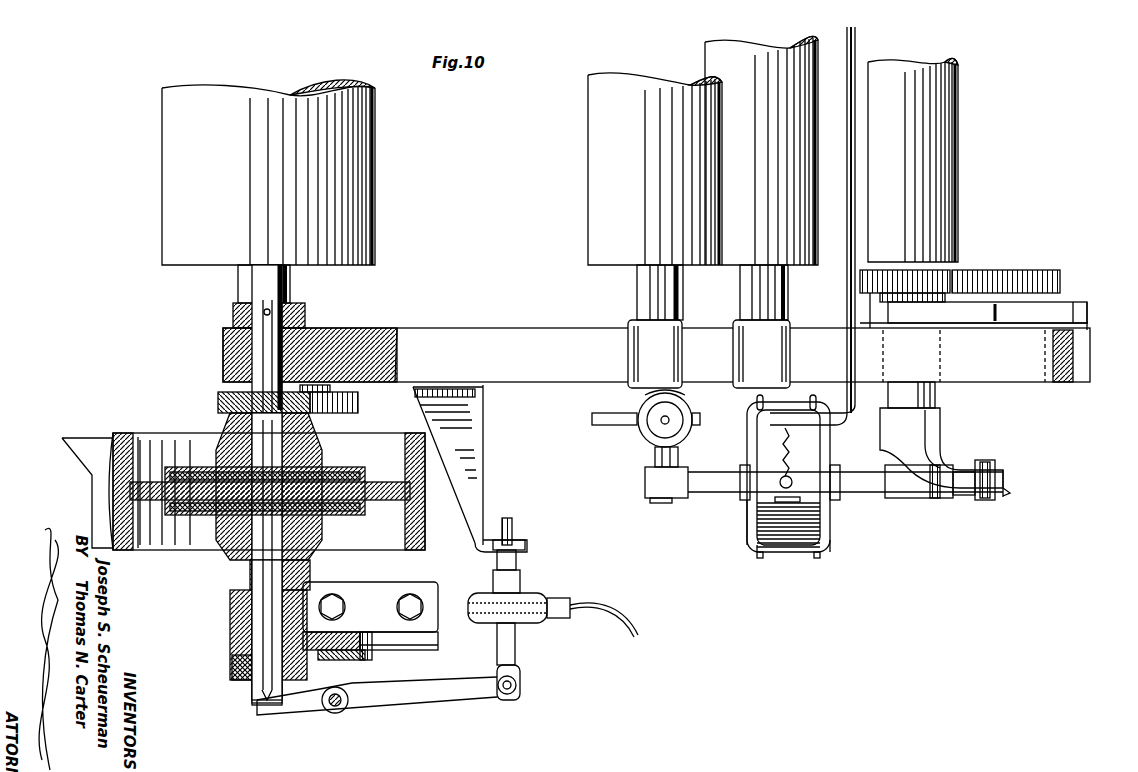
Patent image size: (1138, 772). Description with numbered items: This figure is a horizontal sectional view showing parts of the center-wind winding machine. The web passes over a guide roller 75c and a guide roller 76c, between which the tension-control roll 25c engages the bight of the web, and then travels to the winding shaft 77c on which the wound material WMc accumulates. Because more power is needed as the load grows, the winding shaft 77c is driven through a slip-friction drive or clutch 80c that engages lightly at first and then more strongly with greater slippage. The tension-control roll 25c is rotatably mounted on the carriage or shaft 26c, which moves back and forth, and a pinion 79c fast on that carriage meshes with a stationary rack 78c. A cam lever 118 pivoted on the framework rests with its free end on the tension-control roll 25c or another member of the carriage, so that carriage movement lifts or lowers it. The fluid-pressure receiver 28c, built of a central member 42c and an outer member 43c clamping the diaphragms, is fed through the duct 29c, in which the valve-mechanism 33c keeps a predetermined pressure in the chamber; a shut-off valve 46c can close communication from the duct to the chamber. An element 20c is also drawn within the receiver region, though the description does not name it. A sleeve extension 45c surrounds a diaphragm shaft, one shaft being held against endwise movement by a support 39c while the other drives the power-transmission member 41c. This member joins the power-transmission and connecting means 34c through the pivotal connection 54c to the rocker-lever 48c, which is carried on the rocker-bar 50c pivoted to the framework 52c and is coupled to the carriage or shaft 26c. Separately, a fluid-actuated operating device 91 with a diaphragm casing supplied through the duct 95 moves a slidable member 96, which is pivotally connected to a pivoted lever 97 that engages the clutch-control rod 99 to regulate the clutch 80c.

The wound material WMc is at (268, 172).
The winding shaft 77c is at (290, 283).
The framework 52c is at (480, 333).
The slip-friction drive or clutch 80c is at (347, 508).
The clutch-control rod 99 is at (262, 690).
The pivoted lever 97 is at (435, 697).
The fluid-actuated operating device 91 is at (545, 622).
The slidable member 96 is at (497, 660).
The duct 95 is at (625, 630).
The guide roller 75c is at (655, 196).
The guide roller 76c is at (761, 178).
The tension-control roll 25c is at (913, 160).
The duct 29c is at (858, 222).
The pinion 79c is at (955, 270).
The rack 78c is at (1028, 272).
The cam lever 118 is at (1030, 312).
The carriage or shaft 26c is at (936, 400).
The rocker-lever 48c is at (925, 465).
The pivotal connection 54c is at (990, 465).
The power-transmission and connecting means 34c is at (1012, 493).
The power-transmission member 41c is at (900, 498).
The rocker-bar 50c is at (972, 497).
The sleeve extension 45c is at (698, 495).
The valve-mechanism 33c is at (640, 443).
The support 39c is at (652, 460).
The fluid-pressure receiver 28c is at (770, 560).
The central member 42c is at (797, 560).
The spring 20c is at (770, 490).
The shut-off valve 46c is at (752, 530).
The outer member 43c is at (758, 557).